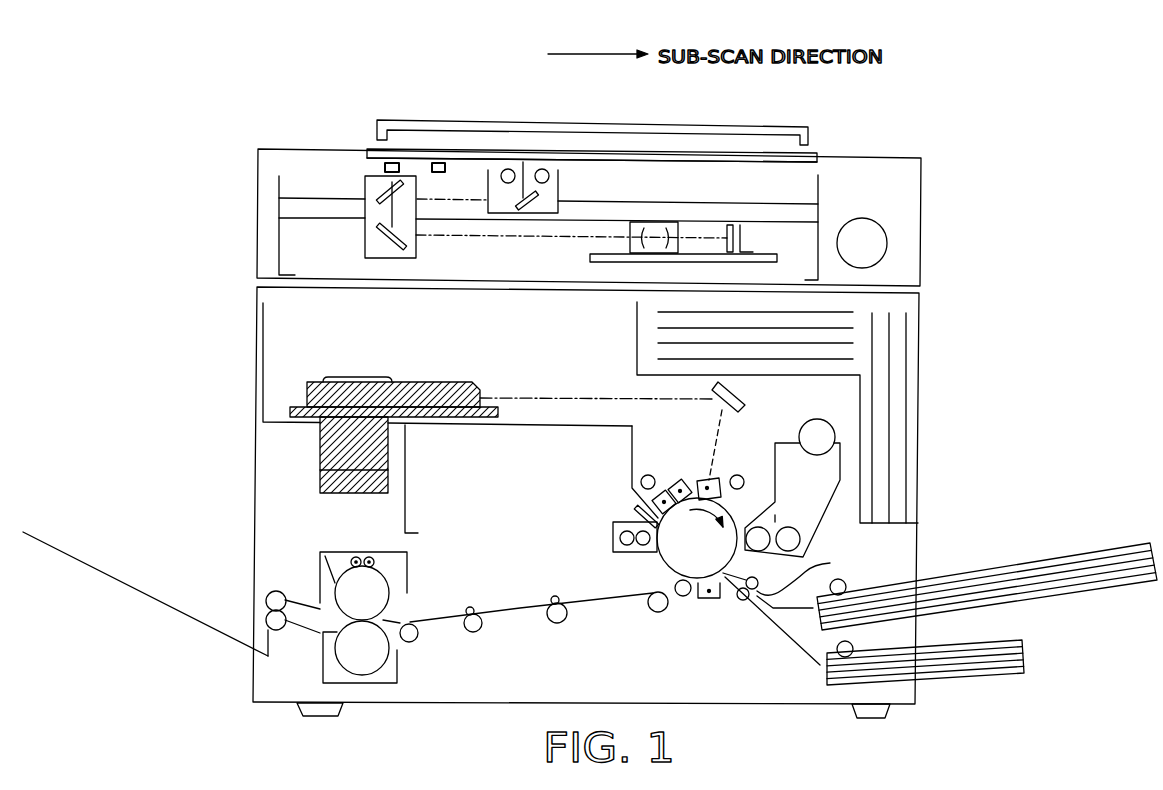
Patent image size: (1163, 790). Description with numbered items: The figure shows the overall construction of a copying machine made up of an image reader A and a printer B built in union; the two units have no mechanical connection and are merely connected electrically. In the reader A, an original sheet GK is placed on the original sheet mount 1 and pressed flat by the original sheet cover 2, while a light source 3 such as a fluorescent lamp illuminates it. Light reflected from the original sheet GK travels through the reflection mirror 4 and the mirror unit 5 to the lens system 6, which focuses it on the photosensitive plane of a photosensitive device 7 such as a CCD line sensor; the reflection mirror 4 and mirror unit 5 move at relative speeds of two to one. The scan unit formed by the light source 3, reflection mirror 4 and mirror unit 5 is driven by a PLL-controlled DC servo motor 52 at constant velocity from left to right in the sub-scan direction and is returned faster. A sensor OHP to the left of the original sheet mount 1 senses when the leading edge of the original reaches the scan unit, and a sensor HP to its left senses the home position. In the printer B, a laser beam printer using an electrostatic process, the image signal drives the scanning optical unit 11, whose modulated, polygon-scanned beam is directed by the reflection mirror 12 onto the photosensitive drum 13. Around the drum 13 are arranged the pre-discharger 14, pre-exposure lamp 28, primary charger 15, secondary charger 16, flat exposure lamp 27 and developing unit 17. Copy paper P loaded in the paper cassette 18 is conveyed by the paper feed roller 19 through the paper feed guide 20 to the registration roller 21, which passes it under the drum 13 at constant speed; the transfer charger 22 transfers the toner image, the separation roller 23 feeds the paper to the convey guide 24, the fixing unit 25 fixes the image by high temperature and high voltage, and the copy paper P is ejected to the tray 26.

The original sheet mount 1 is at (672, 150).
The original sheet cover 2 is at (782, 127).
The light source 3 is at (508, 168).
The reflection mirror 4 is at (531, 207).
The mirror unit 5 is at (370, 240).
The lens system 6 is at (657, 231).
The photosensitive device 7 is at (744, 233).
The scanning optical unit 11 is at (465, 381).
The reflection mirror 12 is at (747, 396).
The photosensitive drum 13 is at (665, 563).
The pre-discharger 14 is at (656, 494).
The primary charger 15 is at (670, 484).
The secondary charger 16 is at (709, 479).
The developing unit 17 is at (803, 516).
The paper cassette 18 is at (889, 584).
The paper feed roller 19 is at (843, 580).
The paper feed guide 20 is at (795, 609).
The registration roller 21 is at (743, 601).
The transfer charger 22 is at (705, 600).
The separation roller 23 is at (681, 597).
The convey guide 24 is at (593, 601).
The fixing unit 25 is at (381, 585).
The tray 26 is at (158, 600).
The flat exposure lamp 27 is at (738, 476).
The pre-exposure lamp 28 is at (641, 479).
The DC servo motor 52 is at (882, 240).
The sensor HP is at (388, 166).
The sensor OHP is at (440, 162).
The original sheet GK is at (728, 152).
The image reader A is at (905, 213).
The printer B is at (910, 391).
The copy paper P is at (1030, 570).